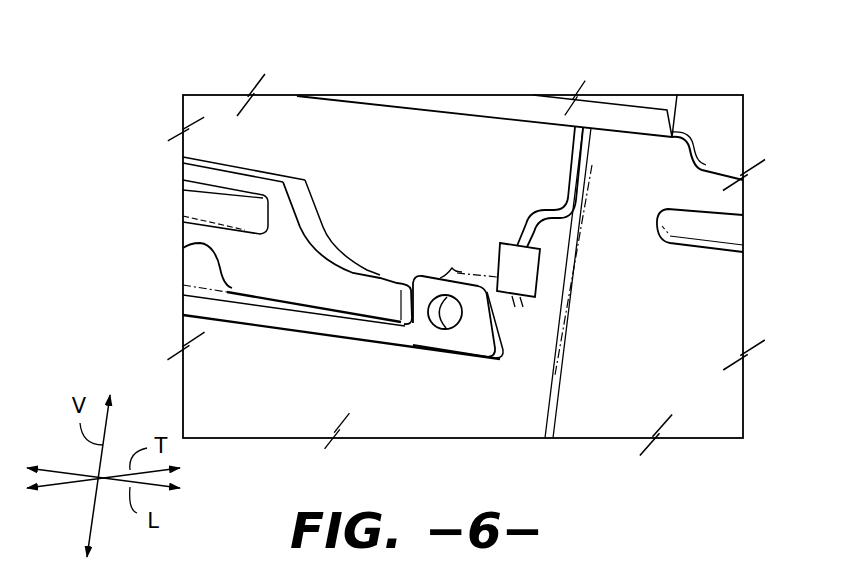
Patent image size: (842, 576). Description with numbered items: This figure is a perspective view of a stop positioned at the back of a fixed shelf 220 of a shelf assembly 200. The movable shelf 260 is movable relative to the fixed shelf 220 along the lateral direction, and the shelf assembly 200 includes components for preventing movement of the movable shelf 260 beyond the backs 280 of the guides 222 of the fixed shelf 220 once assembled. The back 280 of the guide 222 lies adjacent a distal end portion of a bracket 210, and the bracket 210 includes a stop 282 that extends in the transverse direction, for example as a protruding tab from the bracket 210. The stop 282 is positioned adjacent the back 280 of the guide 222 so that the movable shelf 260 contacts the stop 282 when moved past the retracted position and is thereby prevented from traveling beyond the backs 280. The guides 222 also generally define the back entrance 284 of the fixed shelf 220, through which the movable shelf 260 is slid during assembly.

The shelf assembly 200 is at (663, 68).
The bracket 210 is at (712, 307).
The fixed shelf 220 is at (211, 90).
The guide 222 is at (350, 144).
The movable shelf 260 is at (305, 291).
The back 280 is at (584, 160).
The stop 282 is at (505, 274).
The back entrance 284 is at (554, 229).